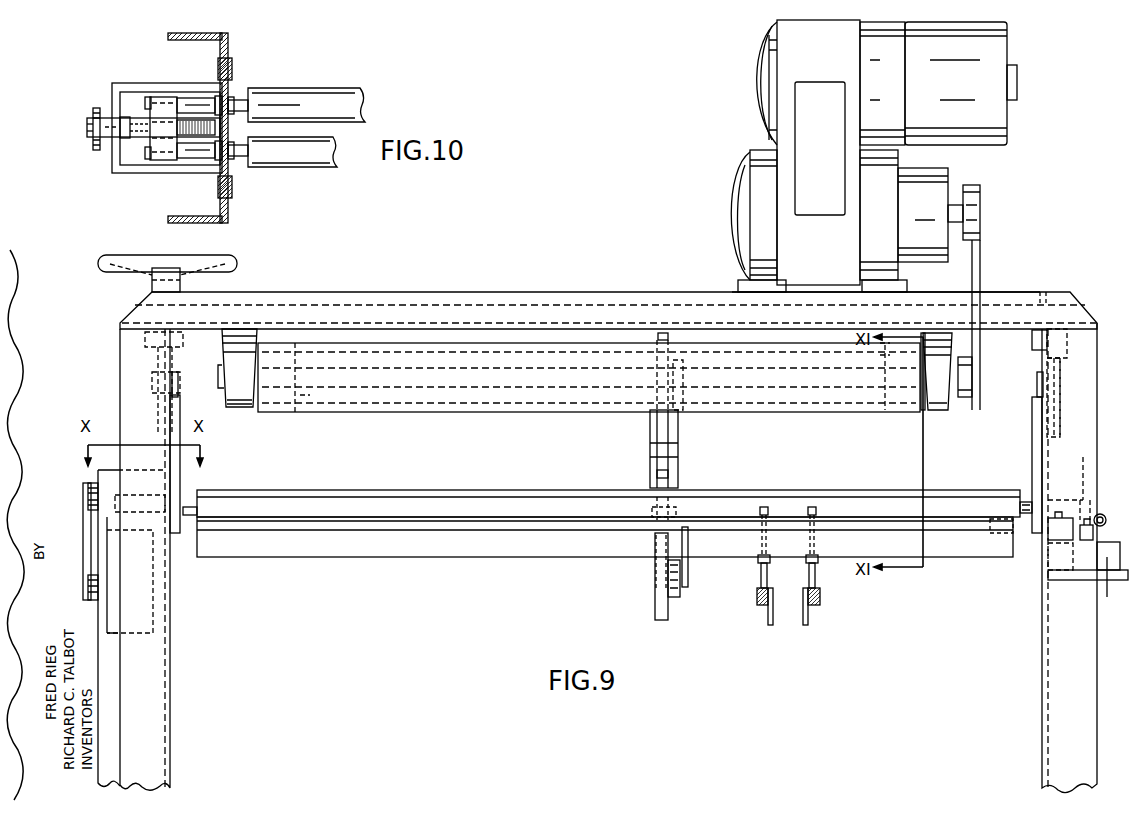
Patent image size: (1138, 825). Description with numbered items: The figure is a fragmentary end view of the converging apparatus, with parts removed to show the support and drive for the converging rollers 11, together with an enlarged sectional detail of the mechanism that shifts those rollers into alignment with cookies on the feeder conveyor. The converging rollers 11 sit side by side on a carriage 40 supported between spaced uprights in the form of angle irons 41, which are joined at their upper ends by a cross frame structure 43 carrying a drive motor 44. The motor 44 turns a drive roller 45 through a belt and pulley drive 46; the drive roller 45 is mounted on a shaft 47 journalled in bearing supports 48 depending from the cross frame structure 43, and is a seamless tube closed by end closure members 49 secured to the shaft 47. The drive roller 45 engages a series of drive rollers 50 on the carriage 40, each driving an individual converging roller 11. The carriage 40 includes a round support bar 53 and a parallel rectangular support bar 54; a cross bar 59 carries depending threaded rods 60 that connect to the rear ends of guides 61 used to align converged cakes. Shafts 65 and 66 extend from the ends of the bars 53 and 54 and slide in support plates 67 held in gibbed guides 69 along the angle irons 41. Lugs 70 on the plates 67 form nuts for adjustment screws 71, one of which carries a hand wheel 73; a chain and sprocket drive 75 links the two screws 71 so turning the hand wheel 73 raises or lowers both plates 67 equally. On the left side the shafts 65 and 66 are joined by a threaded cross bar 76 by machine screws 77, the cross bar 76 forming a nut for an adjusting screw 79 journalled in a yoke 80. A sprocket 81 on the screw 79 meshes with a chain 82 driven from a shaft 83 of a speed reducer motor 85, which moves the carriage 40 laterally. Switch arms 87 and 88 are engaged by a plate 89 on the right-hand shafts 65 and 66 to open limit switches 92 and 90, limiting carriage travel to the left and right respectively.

In FIG. 9, the converging rollers 11 is at (655, 596).
In FIG. 9, the carriage 40 is at (405, 558).
In FIG. 10, the angle irons 41 is at (205, 33).
In FIG. 9, the angle irons 41 is at (312, 402).
In FIG. 9, the cross frame structure 43 is at (446, 292).
In FIG. 9, the drive motor 44 is at (757, 86).
In FIG. 9, the drive roller 45 is at (518, 414).
In FIG. 9, the belt and pulley drive 46 is at (981, 252).
In FIG. 9, the shaft 47 is at (922, 412).
In FIG. 9, the bearing supports 48 is at (238, 410).
In FIG. 9, the end closure members 49 is at (880, 405).
In FIG. 9, the drive rollers 50 is at (665, 333).
In FIG. 10, the round support bar 53 is at (345, 93).
In FIG. 10, the rectangular support bar 54 is at (312, 152).
In FIG. 9, the cross bar 59 is at (490, 540).
In FIG. 9, the threaded rods 60 is at (760, 570).
In FIG. 9, the guides 61 is at (762, 608).
In FIG. 10, the shaft 65 is at (197, 118).
In FIG. 10, the shaft 66 is at (200, 160).
In FIG. 9, the shaft 66 is at (185, 516).
In FIG. 10, the support plates 67 is at (229, 100).
In FIG. 9, the support plates 67 is at (178, 398).
In FIG. 10, the gibbed guides 69 is at (233, 66).
In FIG. 9, the gibbed guides 69 is at (1032, 455).
In FIG. 9, the lugs 70 is at (152, 383).
In FIG. 9, the adjustment screws 71 is at (158, 358).
In FIG. 9, the hand wheel 73 is at (240, 266).
In FIG. 9, the chain and sprocket drive 75 is at (1043, 294).
In FIG. 10, the threaded cross bar 76 is at (166, 96).
In FIG. 10, the machine screws 77 is at (148, 96).
In FIG. 10, the adjusting screw 79 is at (128, 115).
In FIG. 10, the yoke 80 is at (118, 176).
In FIG. 10, the sprocket 81 is at (92, 150).
In FIG. 9, the chain 82 is at (83, 537).
In FIG. 9, the shaft 83 is at (118, 627).
In FIG. 9, the speed reducer motor 85 is at (170, 625).
In FIG. 9, the switch arm 87 is at (1048, 534).
In FIG. 9, the switch arm 88 is at (1101, 514).
In FIG. 9, the plate 89 is at (1086, 482).
In FIG. 9, the limit switch 90 is at (1107, 582).
In FIG. 9, the limit switch 92 is at (1045, 570).